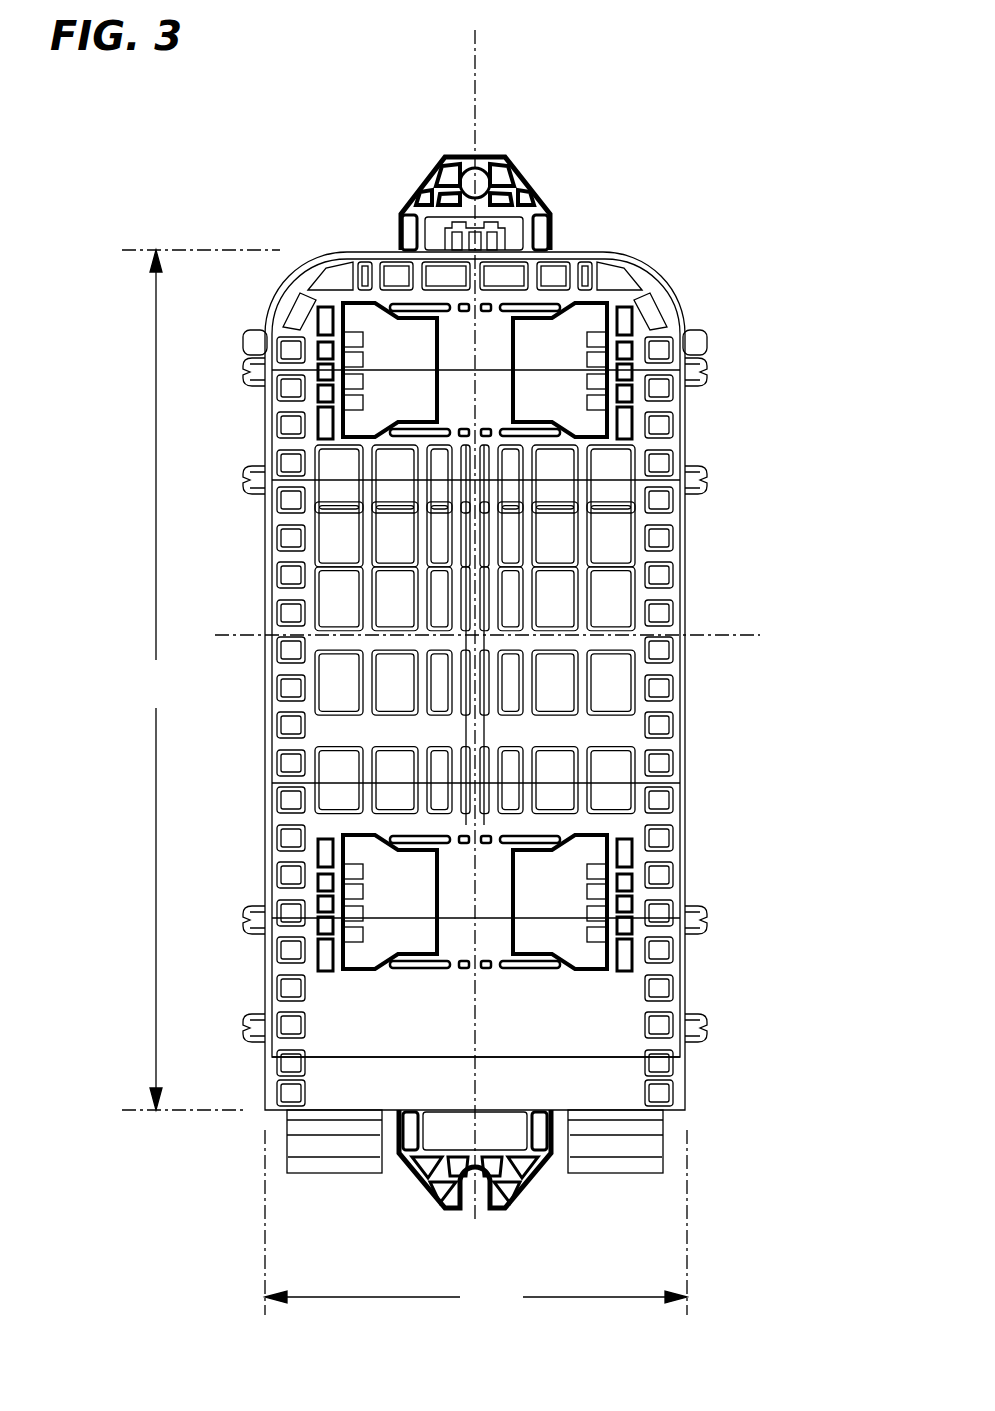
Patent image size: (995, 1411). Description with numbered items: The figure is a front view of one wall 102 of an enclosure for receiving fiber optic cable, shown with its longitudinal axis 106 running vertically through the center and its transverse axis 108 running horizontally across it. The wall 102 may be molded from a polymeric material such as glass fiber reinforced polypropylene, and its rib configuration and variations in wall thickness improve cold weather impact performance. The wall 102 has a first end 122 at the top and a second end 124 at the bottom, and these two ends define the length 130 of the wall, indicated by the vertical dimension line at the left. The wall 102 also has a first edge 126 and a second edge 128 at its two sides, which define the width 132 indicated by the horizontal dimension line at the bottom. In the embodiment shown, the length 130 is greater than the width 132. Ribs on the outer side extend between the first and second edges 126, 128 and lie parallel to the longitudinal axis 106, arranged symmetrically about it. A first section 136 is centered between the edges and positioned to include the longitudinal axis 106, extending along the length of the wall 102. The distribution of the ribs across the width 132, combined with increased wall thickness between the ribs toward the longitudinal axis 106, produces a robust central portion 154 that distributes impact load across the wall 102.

The first wall 102 is at (738, 146).
The longitudinal axis 106 is at (475, 60).
The transverse axis 108 is at (752, 635).
The first end 122 is at (598, 250).
The second end 124 is at (677, 1113).
The first edge 126 is at (690, 668).
The second edge 128 is at (265, 577).
The length 130 is at (201, 680).
The width 132 is at (476, 1222).
The first section 136 is at (480, 800).
The central portion 154 is at (460, 693).